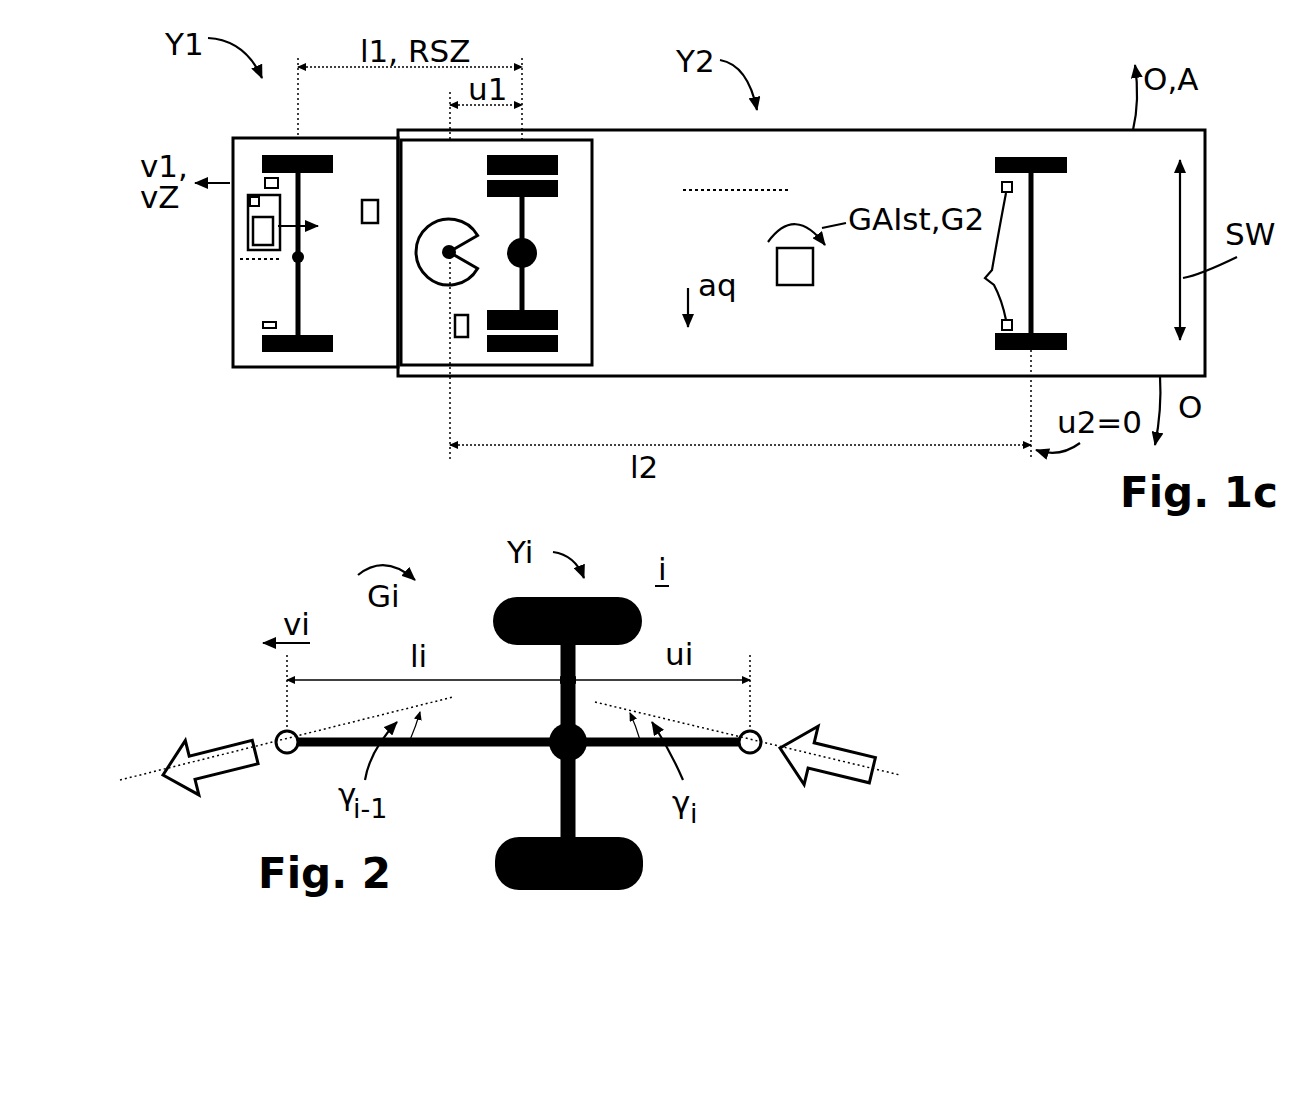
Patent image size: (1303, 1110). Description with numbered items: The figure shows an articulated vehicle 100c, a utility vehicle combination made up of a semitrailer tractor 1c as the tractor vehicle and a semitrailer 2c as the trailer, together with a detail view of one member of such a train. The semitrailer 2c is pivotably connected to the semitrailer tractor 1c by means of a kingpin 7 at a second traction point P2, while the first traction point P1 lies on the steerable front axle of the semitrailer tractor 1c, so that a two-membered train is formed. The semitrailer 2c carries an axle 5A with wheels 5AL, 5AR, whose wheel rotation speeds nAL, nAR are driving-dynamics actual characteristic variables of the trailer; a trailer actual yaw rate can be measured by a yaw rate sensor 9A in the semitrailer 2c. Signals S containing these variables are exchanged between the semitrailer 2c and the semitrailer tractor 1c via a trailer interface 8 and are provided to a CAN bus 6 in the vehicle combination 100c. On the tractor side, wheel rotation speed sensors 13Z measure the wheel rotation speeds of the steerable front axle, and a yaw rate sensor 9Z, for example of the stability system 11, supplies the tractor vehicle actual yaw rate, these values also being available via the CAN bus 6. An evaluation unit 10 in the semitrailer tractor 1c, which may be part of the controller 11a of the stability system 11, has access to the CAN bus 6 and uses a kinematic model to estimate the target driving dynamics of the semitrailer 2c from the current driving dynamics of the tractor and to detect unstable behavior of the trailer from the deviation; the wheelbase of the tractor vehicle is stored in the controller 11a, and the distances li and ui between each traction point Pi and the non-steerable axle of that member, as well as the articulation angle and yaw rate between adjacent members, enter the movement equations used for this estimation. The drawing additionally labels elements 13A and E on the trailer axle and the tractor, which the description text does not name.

In FIG. 1c, the articulated vehicle 100c is at (310, 395).
In FIG. 1c, the semitrailer 2c is at (875, 128).
In FIG. 1c, the semitrailer tractor 1c is at (553, 140).
In FIG. 1c, the front axle 5A is at (1035, 262).
In FIG. 1c, the right wheel of front axle 5AR is at (1068, 165).
In FIG. 1c, the left wheel of front axle 5AL is at (1068, 341).
In FIG. 1c, the CAN bus 6 is at (252, 263).
In FIG. 1c, the kingpin 7 is at (452, 238).
In FIG. 1c, the trailer interface 8 is at (462, 337).
In FIG. 1c, the yaw rate sensor 9A is at (805, 280).
In FIG. 1c, the yaw rate sensor 9Z is at (372, 198).
In FIG. 1c, the evaluation unit 10 is at (283, 223).
In FIG. 1c, the stability system 11 is at (248, 236).
In FIG. 1c, the controller 11a is at (252, 198).
In FIG. 1c, the wheel speed sensors 13A is at (967, 256).
In FIG. 1c, the wheel rotation speed sensors 13Z is at (263, 327).
In FIG. 1c, the first traction point P1 is at (305, 250).
In FIG. 1c, the second traction point P2 is at (449, 252).
In FIG. 1c, the signals S is at (455, 322).
In FIG. 1c, the receiver unit E is at (290, 222).
In FIG. 1c, the wheel rotation speed nAR is at (995, 168).
In FIG. 1c, the wheel rotation speed nAL is at (995, 340).
In FIG. 2, the traction point Pi is at (280, 733).